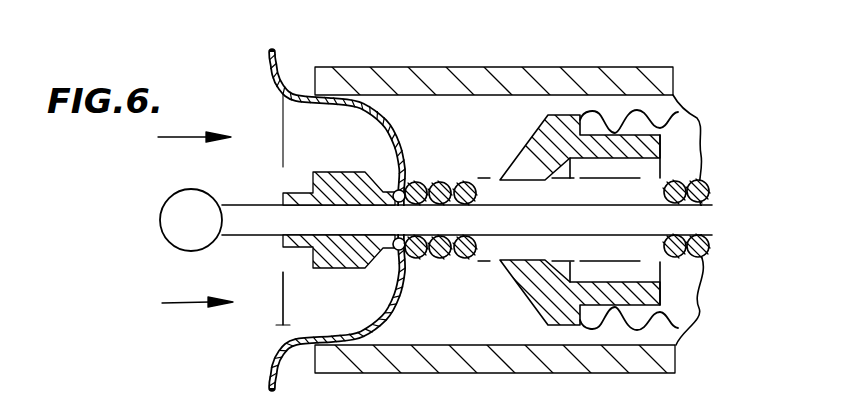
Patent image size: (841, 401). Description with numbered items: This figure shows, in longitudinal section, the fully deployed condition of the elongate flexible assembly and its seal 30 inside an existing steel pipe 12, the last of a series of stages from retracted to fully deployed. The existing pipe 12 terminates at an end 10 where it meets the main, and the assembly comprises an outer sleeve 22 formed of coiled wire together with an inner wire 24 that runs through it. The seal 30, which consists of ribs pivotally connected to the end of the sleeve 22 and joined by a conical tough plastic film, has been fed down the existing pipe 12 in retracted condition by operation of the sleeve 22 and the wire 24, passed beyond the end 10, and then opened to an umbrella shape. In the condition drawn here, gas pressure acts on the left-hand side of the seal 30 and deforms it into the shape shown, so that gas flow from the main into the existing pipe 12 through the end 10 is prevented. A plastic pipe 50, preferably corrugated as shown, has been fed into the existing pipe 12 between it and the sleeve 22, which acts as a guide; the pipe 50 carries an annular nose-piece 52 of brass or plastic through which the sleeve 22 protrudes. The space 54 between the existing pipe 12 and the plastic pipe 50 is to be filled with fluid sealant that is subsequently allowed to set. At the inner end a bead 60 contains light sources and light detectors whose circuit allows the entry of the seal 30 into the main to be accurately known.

The end 10 is at (305, 80).
The existing steel pipe 12 is at (390, 77).
The outer sleeve 22 is at (438, 181).
The inner wire 24 is at (257, 213).
The seal 30 is at (283, 328).
The plastic pipe 50 is at (613, 113).
The annular nose-piece 52 is at (523, 278).
The space 54 is at (648, 110).
The bead 60 is at (168, 231).